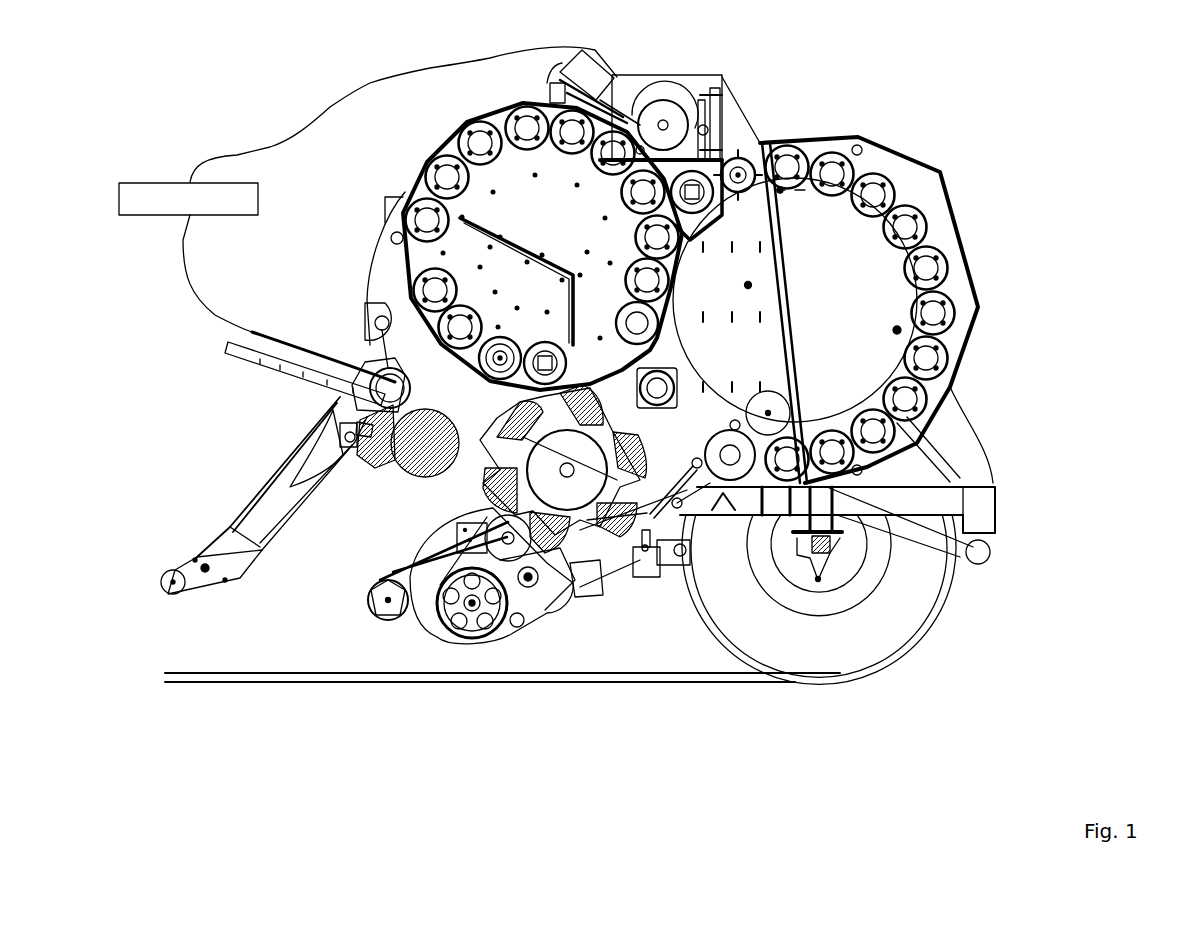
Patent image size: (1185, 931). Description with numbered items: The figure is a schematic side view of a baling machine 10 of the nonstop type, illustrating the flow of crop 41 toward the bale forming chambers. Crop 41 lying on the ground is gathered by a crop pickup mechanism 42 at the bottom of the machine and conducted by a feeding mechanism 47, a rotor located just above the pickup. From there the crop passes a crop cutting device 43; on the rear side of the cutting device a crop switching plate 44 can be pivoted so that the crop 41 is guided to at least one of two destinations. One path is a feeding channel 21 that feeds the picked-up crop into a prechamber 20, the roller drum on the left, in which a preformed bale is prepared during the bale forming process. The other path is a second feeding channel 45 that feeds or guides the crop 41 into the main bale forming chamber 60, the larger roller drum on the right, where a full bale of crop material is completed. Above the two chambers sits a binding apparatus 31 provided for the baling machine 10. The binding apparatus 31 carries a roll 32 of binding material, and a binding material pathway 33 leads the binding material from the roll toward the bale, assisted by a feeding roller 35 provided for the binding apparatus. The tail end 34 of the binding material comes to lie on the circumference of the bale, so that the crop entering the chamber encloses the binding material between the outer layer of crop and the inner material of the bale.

The baling machine 10 is at (367, 240).
The prechamber 20 is at (517, 210).
The feeding channel 21 is at (597, 345).
The binding apparatus 31 is at (615, 92).
The roll of binding material 32 is at (678, 84).
The binding material pathway 33 is at (733, 160).
The tail end of the binding material 34 is at (735, 422).
The feeding roller 35 is at (727, 103).
The crop 41 is at (215, 656).
The crop pickup mechanism 42 is at (497, 640).
The crop cutting device 43 is at (635, 580).
The crop switching plate 44 is at (700, 490).
The second feeding channel 45 is at (683, 420).
The feeding mechanism 47 is at (522, 460).
The main bale forming chamber 60 is at (873, 280).